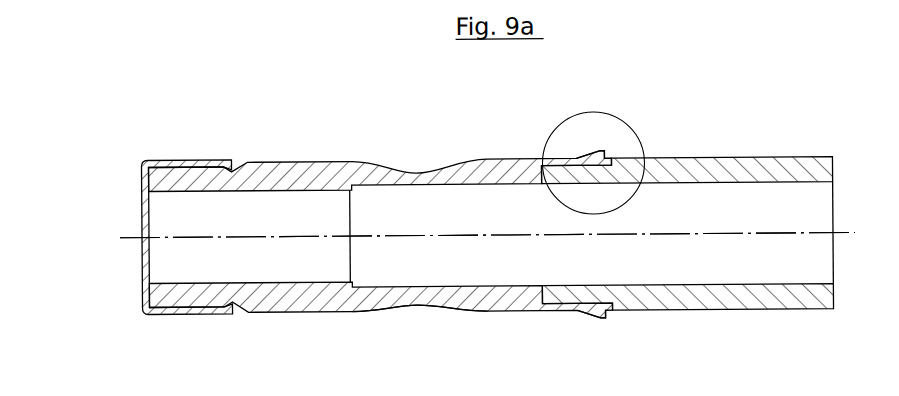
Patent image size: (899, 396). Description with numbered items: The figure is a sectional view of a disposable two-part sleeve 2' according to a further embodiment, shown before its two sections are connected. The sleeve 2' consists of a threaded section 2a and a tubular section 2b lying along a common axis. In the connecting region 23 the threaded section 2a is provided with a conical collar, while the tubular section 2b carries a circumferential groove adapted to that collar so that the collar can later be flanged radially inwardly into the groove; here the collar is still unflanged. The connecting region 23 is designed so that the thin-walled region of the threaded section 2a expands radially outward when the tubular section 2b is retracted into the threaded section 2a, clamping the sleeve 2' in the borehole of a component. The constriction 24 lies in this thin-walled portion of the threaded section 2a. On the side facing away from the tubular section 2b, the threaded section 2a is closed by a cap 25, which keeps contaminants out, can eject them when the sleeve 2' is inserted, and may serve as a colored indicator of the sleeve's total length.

The cap 25 is at (148, 200).
The threaded section 2a is at (307, 174).
The tubular section 2b is at (678, 173).
The constriction 24 is at (433, 317).
The connecting region 23 is at (560, 327).
The two-part sleeve 2' is at (434, 311).